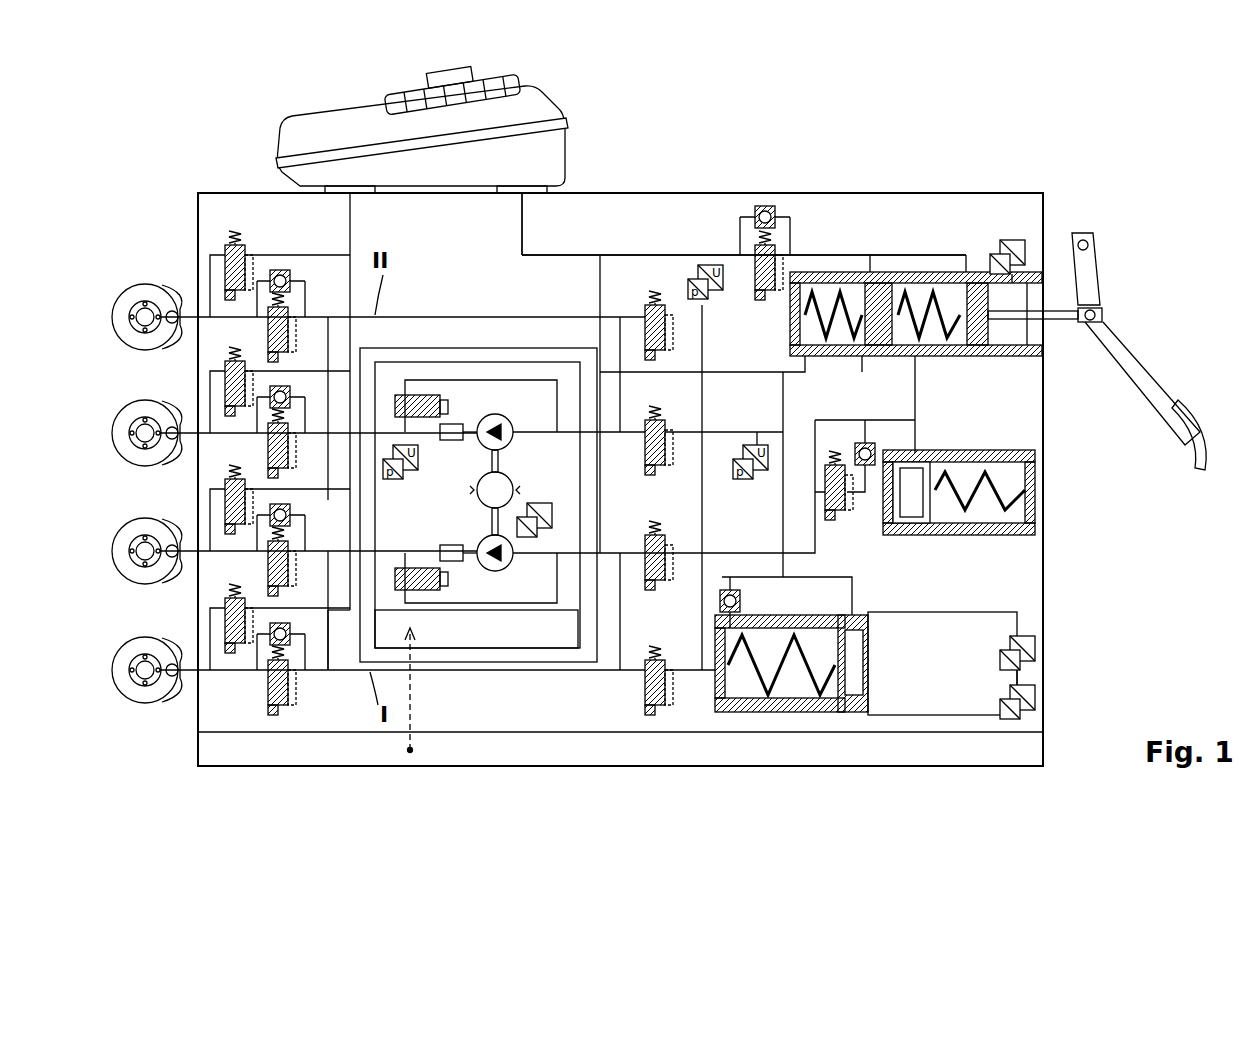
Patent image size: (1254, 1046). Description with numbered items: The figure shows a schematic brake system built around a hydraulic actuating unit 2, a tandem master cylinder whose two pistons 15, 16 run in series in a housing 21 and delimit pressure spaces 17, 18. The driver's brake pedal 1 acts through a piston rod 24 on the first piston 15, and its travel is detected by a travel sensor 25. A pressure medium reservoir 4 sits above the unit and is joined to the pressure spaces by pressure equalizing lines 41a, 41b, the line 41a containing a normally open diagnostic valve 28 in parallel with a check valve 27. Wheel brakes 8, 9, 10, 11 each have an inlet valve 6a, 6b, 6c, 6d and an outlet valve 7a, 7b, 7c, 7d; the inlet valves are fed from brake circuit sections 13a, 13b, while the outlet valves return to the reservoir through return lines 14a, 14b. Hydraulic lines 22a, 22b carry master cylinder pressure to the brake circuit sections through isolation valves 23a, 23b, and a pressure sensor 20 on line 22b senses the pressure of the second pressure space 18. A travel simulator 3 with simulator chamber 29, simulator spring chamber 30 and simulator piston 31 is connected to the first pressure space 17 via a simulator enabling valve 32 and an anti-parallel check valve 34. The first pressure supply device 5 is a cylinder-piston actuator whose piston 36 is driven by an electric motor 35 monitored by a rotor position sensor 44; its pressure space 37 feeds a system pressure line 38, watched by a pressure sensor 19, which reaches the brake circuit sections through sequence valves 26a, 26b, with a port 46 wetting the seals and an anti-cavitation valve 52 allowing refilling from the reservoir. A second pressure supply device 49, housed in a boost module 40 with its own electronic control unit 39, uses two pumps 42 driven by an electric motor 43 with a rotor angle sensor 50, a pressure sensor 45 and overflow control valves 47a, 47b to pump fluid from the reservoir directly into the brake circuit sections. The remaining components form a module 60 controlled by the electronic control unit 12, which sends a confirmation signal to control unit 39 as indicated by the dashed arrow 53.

The brake pedal 1 is at (1140, 372).
The hydraulic actuating unit 2 is at (930, 268).
The travel simulator 3 is at (990, 448).
The pressure medium reservoir 4 is at (330, 130).
The first electrically controllable pressure supply device 5 is at (975, 608).
The inlet valve 6a is at (268, 322).
The inlet valve 6b is at (268, 438).
The inlet valve 6c is at (268, 556).
The inlet valve 6d is at (268, 675).
The outlet valve 7a is at (225, 262).
The outlet valve 7b is at (225, 378).
The outlet valve 7c is at (225, 496).
The outlet valve 7d is at (225, 615).
The wheel brake 8 is at (165, 339).
The wheel brake 9 is at (165, 455).
The wheel brake 10 is at (165, 573).
The wheel brake 11 is at (165, 692).
The electronic control unit 12 is at (945, 752).
The brake circuit section 13a is at (335, 665).
The brake circuit section 13b is at (352, 445).
The return line 14a is at (525, 205).
The return line 14b is at (355, 205).
The piston 15 is at (985, 346).
The piston 16 is at (880, 346).
The pressure space 17 is at (935, 340).
The pressure space 18 is at (826, 290).
The pressure sensor 19 is at (690, 270).
The pressure sensor 20 is at (757, 485).
The housing 21 is at (910, 210).
The hydraulic line 22a is at (728, 553).
The hydraulic line 22b is at (722, 432).
The isolation valve 23a is at (660, 585).
The isolation valve 23b is at (660, 465).
The piston rod 24 is at (1060, 322).
The travel sensor 25 is at (1010, 250).
The sequence valve 26a is at (645, 690).
The sequence valve 26b is at (668, 350).
The check valve 27 is at (755, 212).
The diagnostic valve 28 is at (757, 280).
The simulator chamber 29 is at (885, 500).
The simulator spring chamber 30 is at (1020, 512).
The simulator piston 31 is at (912, 458).
The simulator enabling valve 32 is at (830, 510).
The check valve 34 is at (858, 445).
The electric motor 35 is at (960, 612).
The piston 36 is at (845, 700).
The pressure space 37 is at (780, 700).
The system pressure line 38 is at (700, 648).
The electronic control unit 39 is at (520, 650).
The boost module 40 is at (512, 345).
The pressure equalizing line 41a is at (868, 255).
The pressure equalizing line 41b is at (772, 372).
The pump 42 is at (509, 428).
The electric motor 43 is at (513, 480).
The rotor position sensor 44 is at (1038, 655).
The pressure sensor 45 is at (420, 462).
The port 46 is at (855, 630).
The control valve 47a is at (442, 582).
The control valve 47b is at (442, 408).
The second electrically controllable pressure supply device 49 is at (472, 510).
The rotor angle sensor 50 is at (552, 520).
The anti-cavitation valve 52 is at (742, 600).
The dashed arrow 53 is at (418, 705).
The second electrohydraulic module 60 is at (998, 190).